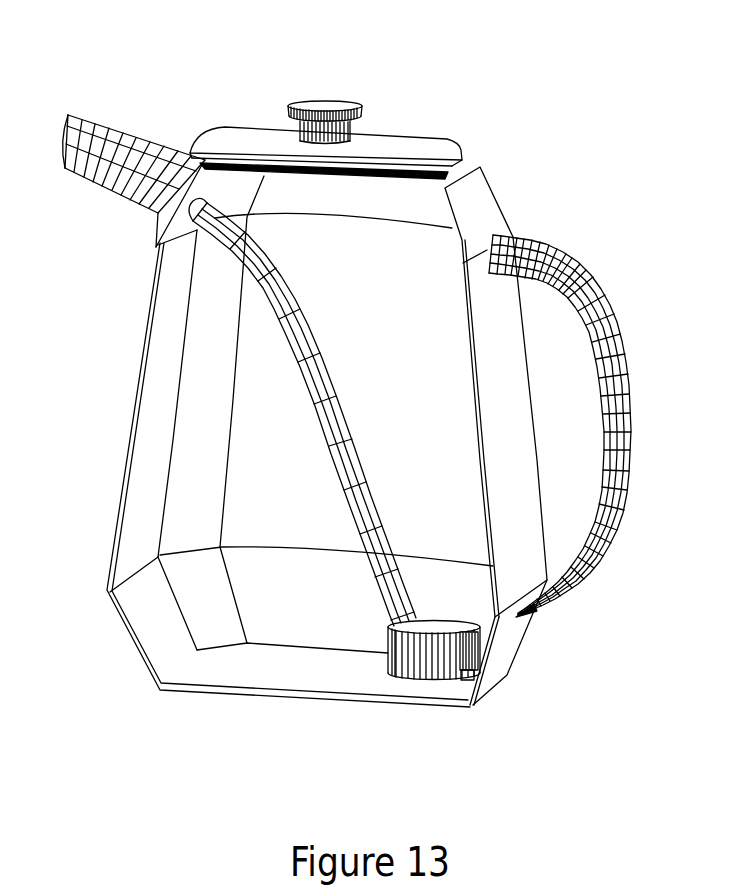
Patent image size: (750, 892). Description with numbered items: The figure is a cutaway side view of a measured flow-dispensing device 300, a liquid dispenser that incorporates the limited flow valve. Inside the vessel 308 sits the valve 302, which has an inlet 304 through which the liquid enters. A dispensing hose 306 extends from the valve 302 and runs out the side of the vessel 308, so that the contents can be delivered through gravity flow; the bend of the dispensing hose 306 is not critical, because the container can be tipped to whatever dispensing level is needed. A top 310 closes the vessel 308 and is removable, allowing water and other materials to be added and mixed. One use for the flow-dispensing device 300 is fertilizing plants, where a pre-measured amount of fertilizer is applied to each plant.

The measured flow-dispensing device 300 is at (650, 407).
The valve 302 is at (404, 657).
The inlet 304 is at (465, 675).
The dispensing hose 306 is at (337, 404).
The vessel 308 is at (113, 553).
The top 310 is at (314, 92).